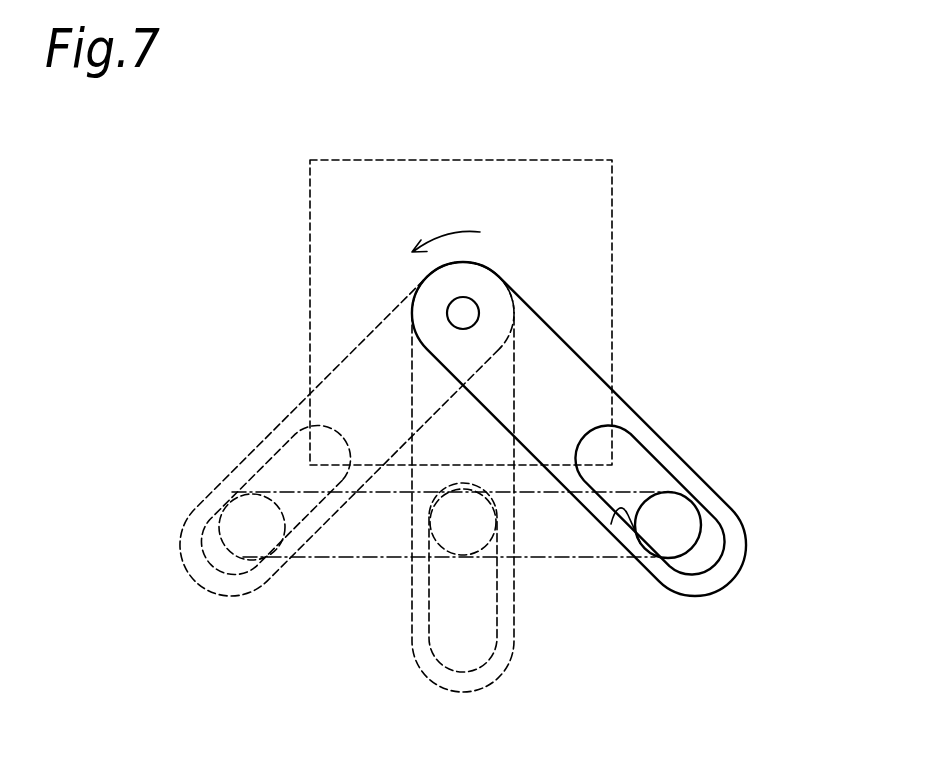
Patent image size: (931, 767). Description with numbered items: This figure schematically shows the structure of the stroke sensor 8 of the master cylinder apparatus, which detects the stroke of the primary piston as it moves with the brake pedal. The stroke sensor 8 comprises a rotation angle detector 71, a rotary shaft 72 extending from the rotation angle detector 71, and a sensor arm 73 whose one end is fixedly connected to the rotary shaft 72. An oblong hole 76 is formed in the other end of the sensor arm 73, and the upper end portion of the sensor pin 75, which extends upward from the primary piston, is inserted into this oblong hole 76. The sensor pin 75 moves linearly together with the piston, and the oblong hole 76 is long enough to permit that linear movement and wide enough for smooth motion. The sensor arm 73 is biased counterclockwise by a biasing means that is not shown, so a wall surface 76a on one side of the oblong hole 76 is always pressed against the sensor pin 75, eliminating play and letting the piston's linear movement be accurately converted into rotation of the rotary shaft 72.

The stroke sensor 8 is at (665, 182).
The rotation angle detector 71 is at (330, 246).
The rotary shaft 72 is at (467, 305).
The sensor arm 73 is at (568, 350).
The sensor pin 75 is at (690, 535).
The oblong hole 76 is at (645, 470).
The wall surface 76a is at (611, 524).